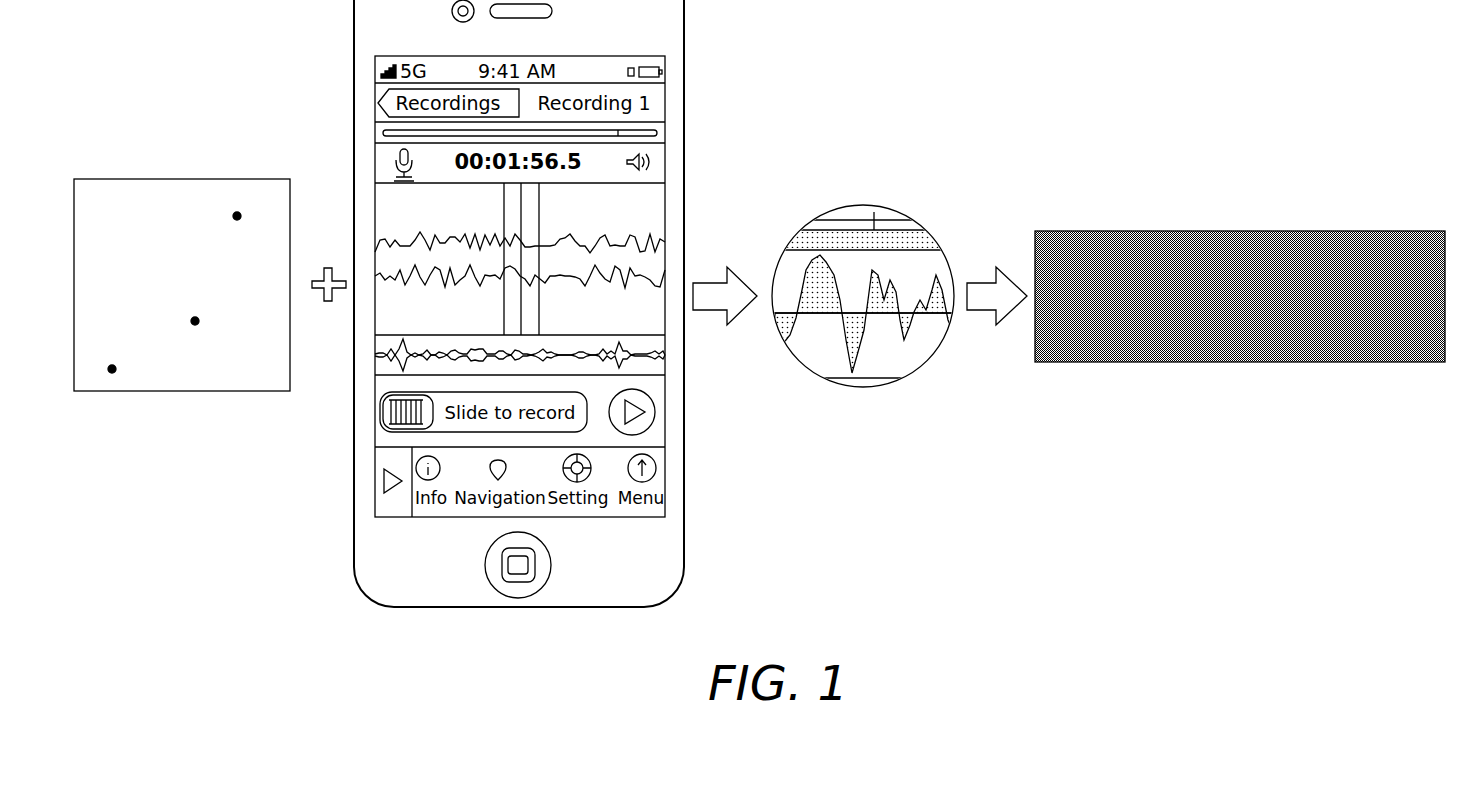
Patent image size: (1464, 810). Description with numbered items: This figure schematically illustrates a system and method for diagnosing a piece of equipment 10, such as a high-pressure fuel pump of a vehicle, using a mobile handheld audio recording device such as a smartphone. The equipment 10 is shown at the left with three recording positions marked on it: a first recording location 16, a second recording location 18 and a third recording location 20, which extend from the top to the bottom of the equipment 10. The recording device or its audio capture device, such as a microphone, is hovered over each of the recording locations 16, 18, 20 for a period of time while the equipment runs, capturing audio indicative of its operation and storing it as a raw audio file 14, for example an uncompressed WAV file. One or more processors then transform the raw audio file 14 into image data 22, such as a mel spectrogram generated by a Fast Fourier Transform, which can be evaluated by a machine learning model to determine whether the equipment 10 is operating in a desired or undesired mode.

The piece of equipment 10 is at (121, 168).
The raw audio file 14 is at (862, 205).
The first recording location 16 is at (238, 213).
The second recording location 18 is at (196, 324).
The third recording location 20 is at (113, 373).
The image data 22 is at (1240, 230).